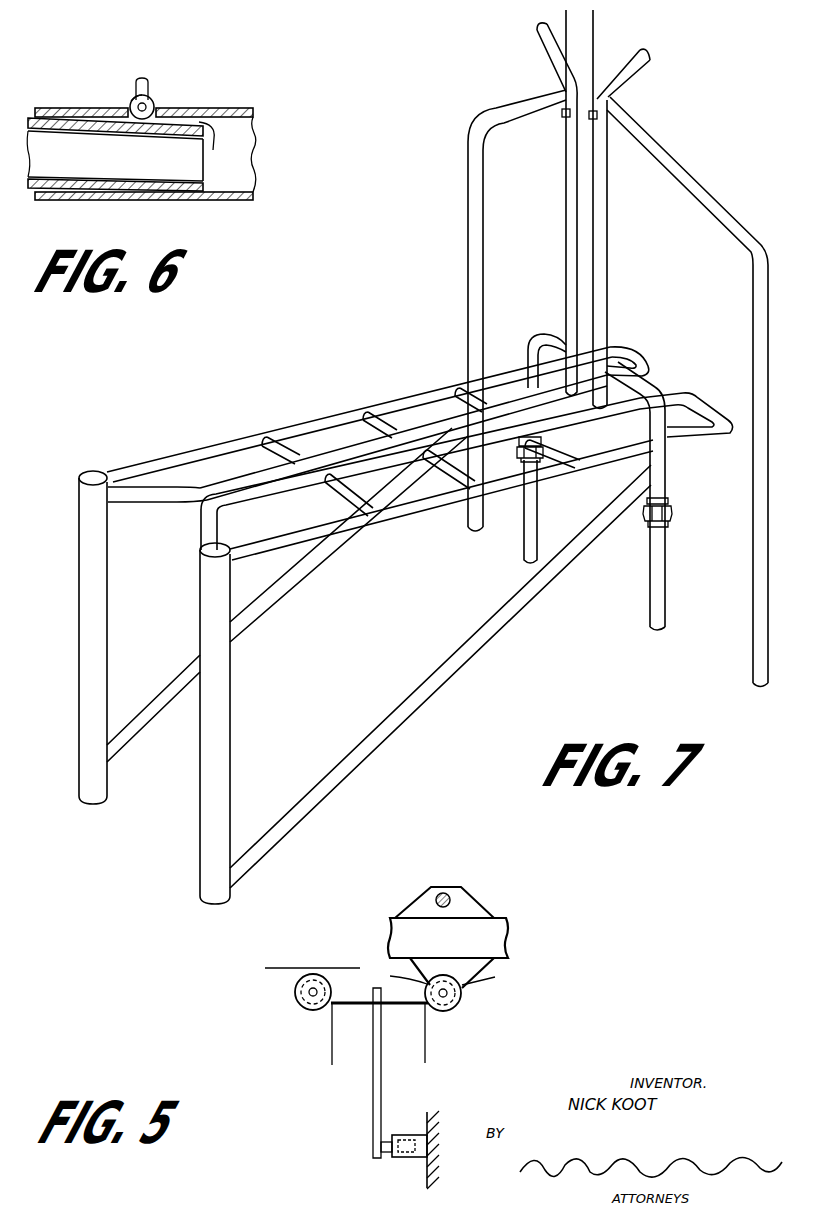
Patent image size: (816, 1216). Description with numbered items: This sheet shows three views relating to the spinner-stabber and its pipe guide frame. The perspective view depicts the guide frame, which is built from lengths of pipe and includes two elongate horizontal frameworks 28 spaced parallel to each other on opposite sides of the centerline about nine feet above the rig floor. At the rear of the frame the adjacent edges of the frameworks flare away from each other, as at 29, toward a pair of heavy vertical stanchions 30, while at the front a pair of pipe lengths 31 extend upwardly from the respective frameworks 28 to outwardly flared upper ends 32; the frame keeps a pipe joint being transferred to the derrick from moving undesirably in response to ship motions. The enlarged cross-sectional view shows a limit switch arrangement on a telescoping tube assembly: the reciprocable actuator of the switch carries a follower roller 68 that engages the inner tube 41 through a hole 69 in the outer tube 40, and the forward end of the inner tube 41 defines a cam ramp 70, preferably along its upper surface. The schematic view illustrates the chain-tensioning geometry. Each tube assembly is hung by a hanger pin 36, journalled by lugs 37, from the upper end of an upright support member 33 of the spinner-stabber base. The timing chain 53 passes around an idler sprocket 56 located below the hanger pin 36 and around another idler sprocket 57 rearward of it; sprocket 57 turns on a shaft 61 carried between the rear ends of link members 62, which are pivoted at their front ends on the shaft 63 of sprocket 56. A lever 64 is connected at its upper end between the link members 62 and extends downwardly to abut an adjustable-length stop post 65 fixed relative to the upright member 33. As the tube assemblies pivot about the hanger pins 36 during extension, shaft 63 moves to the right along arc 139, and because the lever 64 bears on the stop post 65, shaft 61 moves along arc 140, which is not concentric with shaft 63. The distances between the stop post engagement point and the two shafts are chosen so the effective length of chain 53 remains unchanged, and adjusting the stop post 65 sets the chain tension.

In FIG. 7, the horizontal frameworks 28 is at (326, 418).
In FIG. 7, the flared edges of the frameworks 29 is at (167, 502).
In FIG. 7, the vertical stanchions 30 is at (79, 660).
In FIG. 7, the pipe lengths 31 is at (595, 272).
In FIG. 7, the outwardly flared upper ends 32 is at (548, 62).
In FIG. 5, the upright support members 33 is at (425, 1165).
In FIG. 5, the hanger pin 36 is at (446, 893).
In FIG. 5, the lugs 37 is at (472, 903).
In FIG. 6, the outer tube 40 is at (223, 112).
In FIG. 5, the outer tube 40 is at (500, 930).
In FIG. 6, the inner tube 41 is at (172, 193).
In FIG. 5, the timing chain 53 is at (332, 1045).
In FIG. 5, the idler sprocket 56 is at (440, 1012).
In FIG. 5, the idler sprocket 57 is at (318, 973).
In FIG. 5, the shaft 61 is at (300, 993).
In FIG. 5, the link members 62 is at (356, 998).
In FIG. 5, the shaft 63 is at (461, 1005).
In FIG. 5, the lever 64 is at (373, 1100).
In FIG. 5, the stop post 65 is at (403, 1137).
In FIG. 6, the follower roller 68 is at (154, 101).
In FIG. 6, the hole 69 is at (132, 104).
In FIG. 6, the cam ramp 70 is at (213, 137).
In FIG. 5, the arc 139 is at (465, 989).
In FIG. 5, the arc 140 is at (300, 1006).